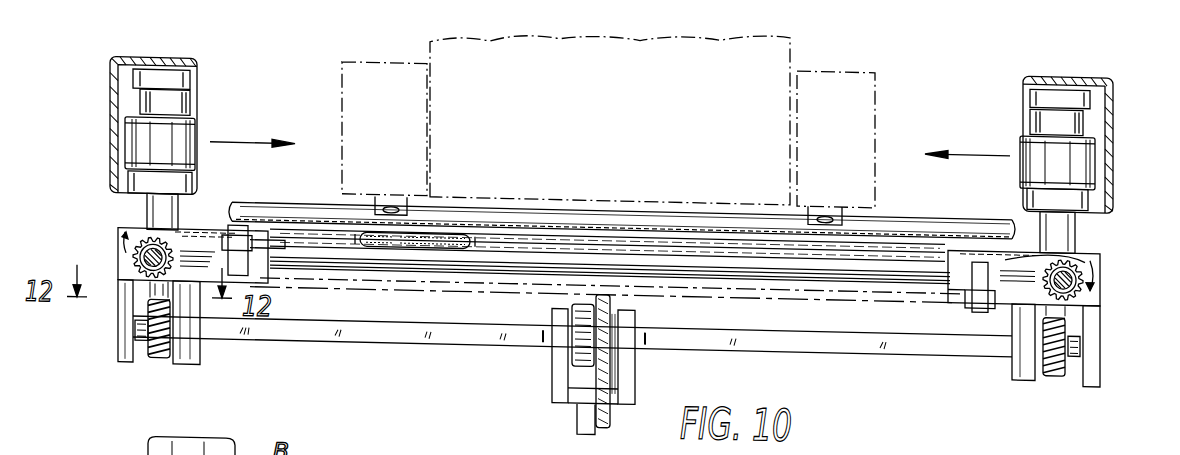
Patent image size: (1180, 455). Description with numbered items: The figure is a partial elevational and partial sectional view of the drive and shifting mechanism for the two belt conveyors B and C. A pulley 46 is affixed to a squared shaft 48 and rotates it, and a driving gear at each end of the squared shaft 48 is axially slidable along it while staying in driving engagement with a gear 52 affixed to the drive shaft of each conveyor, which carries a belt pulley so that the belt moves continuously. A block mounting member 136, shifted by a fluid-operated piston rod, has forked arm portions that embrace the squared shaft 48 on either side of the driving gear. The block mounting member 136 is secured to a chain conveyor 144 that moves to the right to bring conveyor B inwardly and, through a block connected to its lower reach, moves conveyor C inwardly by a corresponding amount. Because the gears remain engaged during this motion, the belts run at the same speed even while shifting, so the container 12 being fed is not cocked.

The workpiece / panel 12 is at (792, 38).
The pulley 46 is at (588, 375).
The squared shaft 48 is at (303, 333).
The gear 52 is at (125, 327).
The block mounting member 136 is at (112, 296).
The chain conveyor 144 is at (498, 237).
The conveyor B is at (201, 72).
The conveyor C is at (1020, 74).